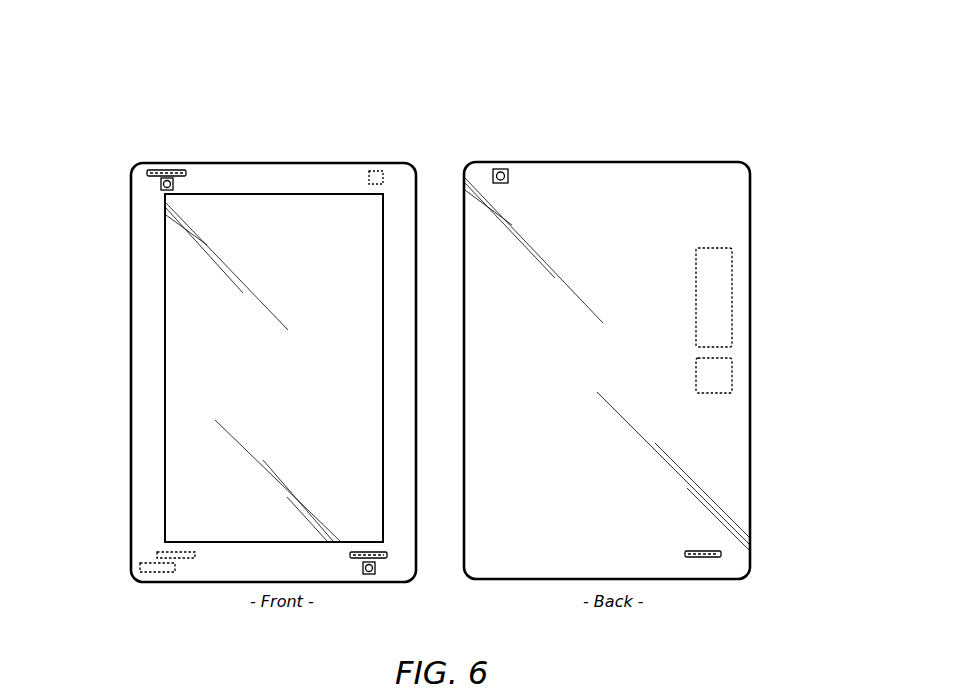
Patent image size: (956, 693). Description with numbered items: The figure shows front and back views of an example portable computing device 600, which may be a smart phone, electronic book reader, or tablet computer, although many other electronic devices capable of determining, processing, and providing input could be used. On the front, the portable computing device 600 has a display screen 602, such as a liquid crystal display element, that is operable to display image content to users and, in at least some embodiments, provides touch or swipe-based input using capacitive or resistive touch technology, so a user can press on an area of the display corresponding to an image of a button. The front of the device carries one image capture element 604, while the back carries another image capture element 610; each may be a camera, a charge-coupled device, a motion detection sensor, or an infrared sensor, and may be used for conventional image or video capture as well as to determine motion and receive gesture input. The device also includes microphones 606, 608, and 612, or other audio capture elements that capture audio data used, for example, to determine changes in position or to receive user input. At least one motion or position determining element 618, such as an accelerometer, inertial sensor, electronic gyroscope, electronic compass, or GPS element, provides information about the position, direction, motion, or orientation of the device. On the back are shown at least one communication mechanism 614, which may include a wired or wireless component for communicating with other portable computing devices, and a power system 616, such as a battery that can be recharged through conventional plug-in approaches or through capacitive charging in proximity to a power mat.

The portable computing device 600 is at (772, 169).
The display screen 602 is at (164, 296).
The image capture element 604 is at (160, 184).
The microphone 606 is at (176, 172).
The microphone 608 is at (380, 559).
The image capture element 610 is at (370, 172).
The microphone 612 is at (185, 559).
The communication mechanism 614 is at (732, 312).
The power system 616 is at (732, 378).
The motion or position determining element 618 is at (155, 573).